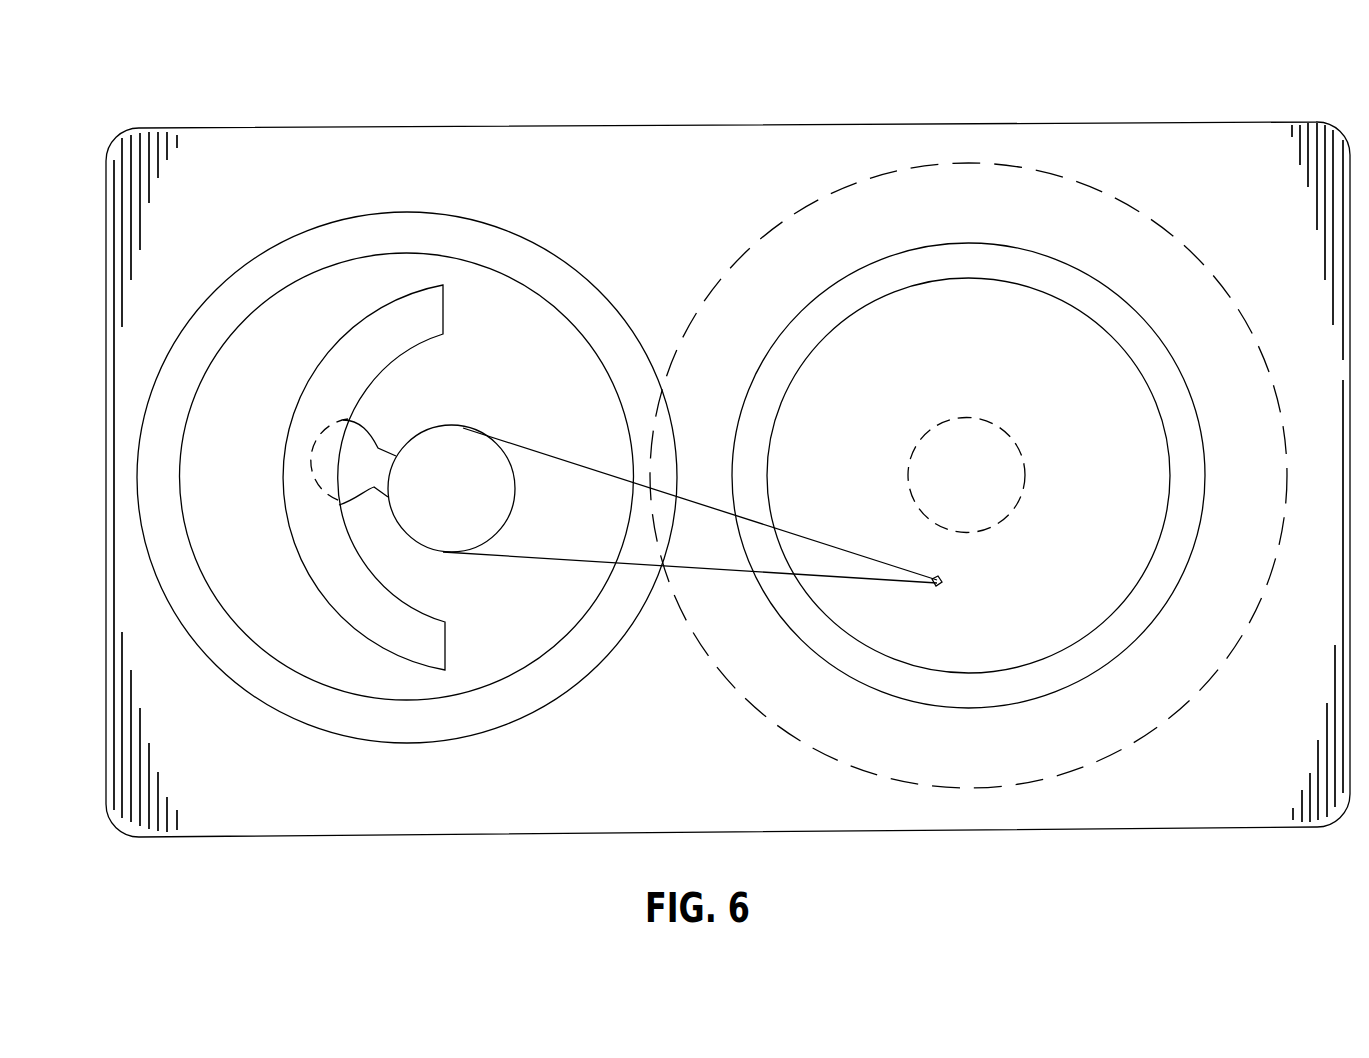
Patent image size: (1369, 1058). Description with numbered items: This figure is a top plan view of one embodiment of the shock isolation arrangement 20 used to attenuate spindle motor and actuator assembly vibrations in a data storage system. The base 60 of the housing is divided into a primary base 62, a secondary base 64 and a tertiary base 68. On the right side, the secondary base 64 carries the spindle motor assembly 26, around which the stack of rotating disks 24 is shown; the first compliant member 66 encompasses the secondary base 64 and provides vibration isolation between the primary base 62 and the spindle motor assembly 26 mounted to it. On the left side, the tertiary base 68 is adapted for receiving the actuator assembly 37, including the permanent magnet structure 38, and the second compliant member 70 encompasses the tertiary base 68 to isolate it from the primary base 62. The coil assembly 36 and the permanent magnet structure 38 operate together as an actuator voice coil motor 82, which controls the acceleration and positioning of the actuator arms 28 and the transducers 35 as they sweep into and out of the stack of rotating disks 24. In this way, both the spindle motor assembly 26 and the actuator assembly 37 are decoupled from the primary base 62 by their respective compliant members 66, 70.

The tape cassette 20 is at (728, 441).
The rotating disks 24 is at (1278, 393).
The spindle motor assembly 26 is at (1018, 444).
The actuator arms 28 is at (728, 576).
The transducers 35 is at (947, 586).
The coil assembly 36 is at (365, 424).
The actuator assembly 37 is at (470, 413).
The permanent magnet structure 38 is at (355, 325).
The base 60 is at (455, 124).
The primary base 62 is at (671, 199).
The secondary base 64 is at (967, 334).
The first compliant member 66 is at (1063, 269).
The tertiary base 68 is at (240, 475).
The second compliant member 70 is at (450, 226).
The actuator voice coil motor 82 is at (457, 586).